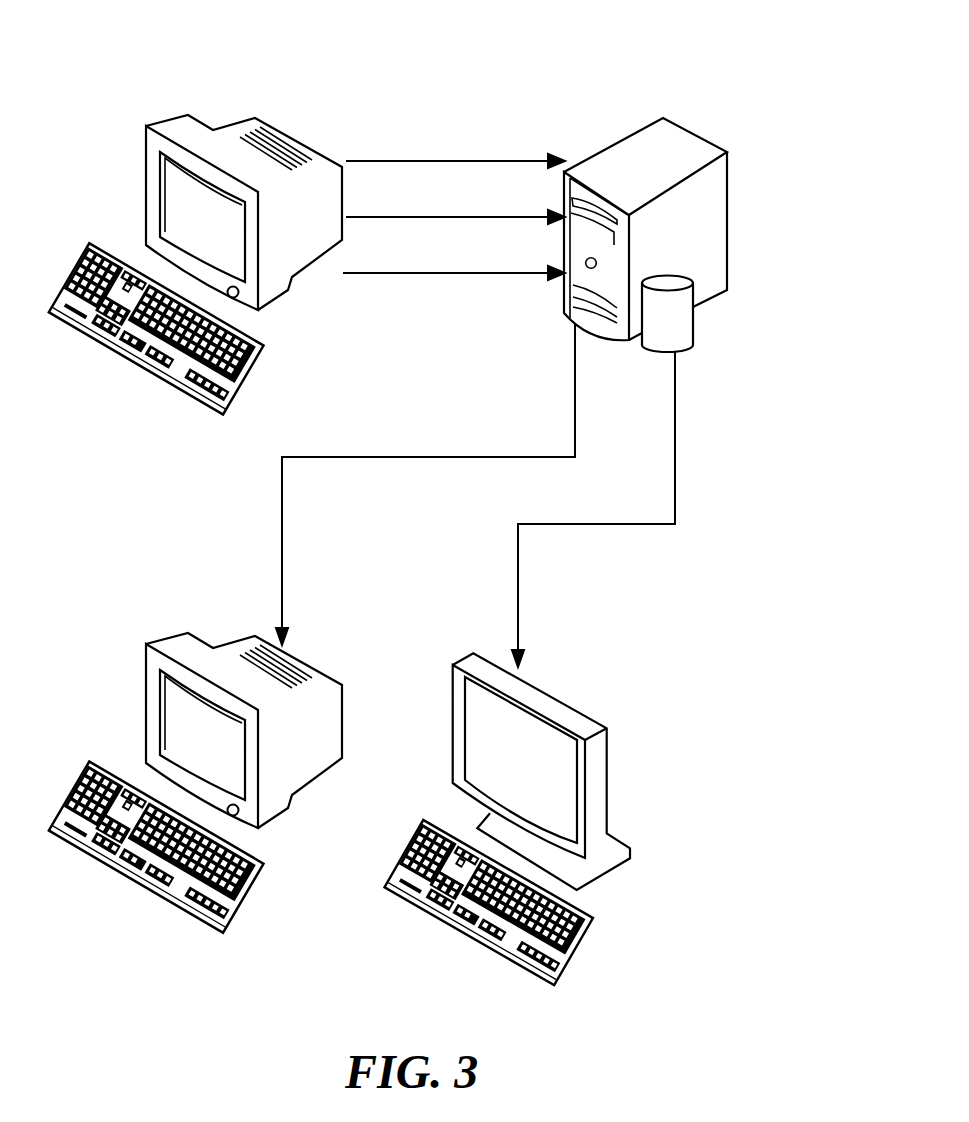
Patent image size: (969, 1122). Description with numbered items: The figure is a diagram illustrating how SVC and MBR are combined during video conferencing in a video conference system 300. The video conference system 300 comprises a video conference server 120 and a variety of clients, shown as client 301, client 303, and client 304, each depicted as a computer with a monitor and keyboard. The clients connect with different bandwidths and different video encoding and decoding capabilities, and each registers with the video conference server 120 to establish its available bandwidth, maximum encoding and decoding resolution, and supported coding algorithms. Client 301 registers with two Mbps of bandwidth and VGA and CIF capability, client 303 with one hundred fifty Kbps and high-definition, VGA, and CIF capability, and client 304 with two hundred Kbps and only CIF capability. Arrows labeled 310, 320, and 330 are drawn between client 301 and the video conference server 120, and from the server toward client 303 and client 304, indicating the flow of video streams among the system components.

The video conference system 300 is at (505, 28).
The video conference server 120 is at (697, 138).
The client 301 is at (320, 150).
The client 303 is at (320, 667).
The client 304 is at (563, 693).
The request 310 is at (425, 161).
The response data 320 is at (390, 216).
The shared data 330 is at (436, 272).